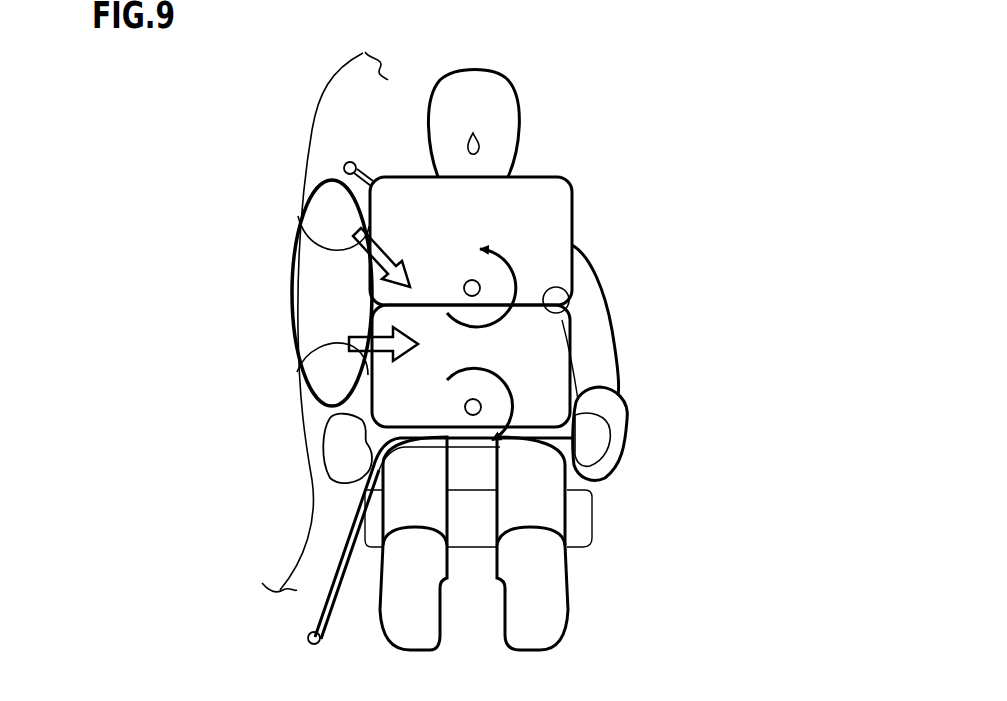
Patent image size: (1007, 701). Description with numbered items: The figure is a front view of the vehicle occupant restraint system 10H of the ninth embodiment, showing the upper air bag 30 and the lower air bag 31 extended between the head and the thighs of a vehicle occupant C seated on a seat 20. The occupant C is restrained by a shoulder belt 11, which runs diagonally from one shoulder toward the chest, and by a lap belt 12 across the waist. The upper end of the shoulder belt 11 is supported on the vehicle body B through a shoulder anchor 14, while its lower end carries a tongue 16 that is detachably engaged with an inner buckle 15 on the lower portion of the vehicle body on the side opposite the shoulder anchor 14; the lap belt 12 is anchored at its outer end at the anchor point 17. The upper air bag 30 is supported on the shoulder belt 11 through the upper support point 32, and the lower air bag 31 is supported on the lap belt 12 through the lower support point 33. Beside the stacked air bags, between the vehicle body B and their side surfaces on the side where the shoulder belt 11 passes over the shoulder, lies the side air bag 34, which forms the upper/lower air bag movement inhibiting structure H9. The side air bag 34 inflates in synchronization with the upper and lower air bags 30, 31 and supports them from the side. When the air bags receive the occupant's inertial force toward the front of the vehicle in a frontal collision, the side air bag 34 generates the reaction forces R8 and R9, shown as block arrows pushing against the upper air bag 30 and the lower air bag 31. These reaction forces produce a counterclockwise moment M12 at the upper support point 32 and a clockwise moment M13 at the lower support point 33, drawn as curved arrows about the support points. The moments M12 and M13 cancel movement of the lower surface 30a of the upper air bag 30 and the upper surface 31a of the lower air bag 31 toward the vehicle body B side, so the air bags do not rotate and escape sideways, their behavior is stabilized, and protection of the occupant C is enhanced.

The vehicle occupant restraint system 10H is at (612, 96).
The shoulder belt 11 is at (364, 178).
The lap belt 12 is at (413, 434).
The shoulder anchor 14 is at (344, 168).
The inner buckle 15 is at (595, 474).
The tongue 16 is at (607, 462).
The lap belt anchor 17 is at (308, 637).
The seat 20 is at (602, 517).
The upper air bag 30 is at (430, 212).
The lower surface 30a is at (565, 322).
The lower air bag 31 is at (392, 412).
The upper surface 31a is at (568, 289).
The upper support point 32 is at (473, 288).
The lower support point 33 is at (473, 407).
The side air bag 34 is at (318, 272).
The vehicle body B is at (312, 492).
The vehicle occupant C is at (529, 96).
The upper/lower air bag movement inhibiting structure H9 is at (281, 323).
The counterclockwise moment M12 is at (480, 284).
The clockwise moment M13 is at (508, 402).
The reaction force R8 is at (298, 217).
The reaction force R9 is at (297, 372).